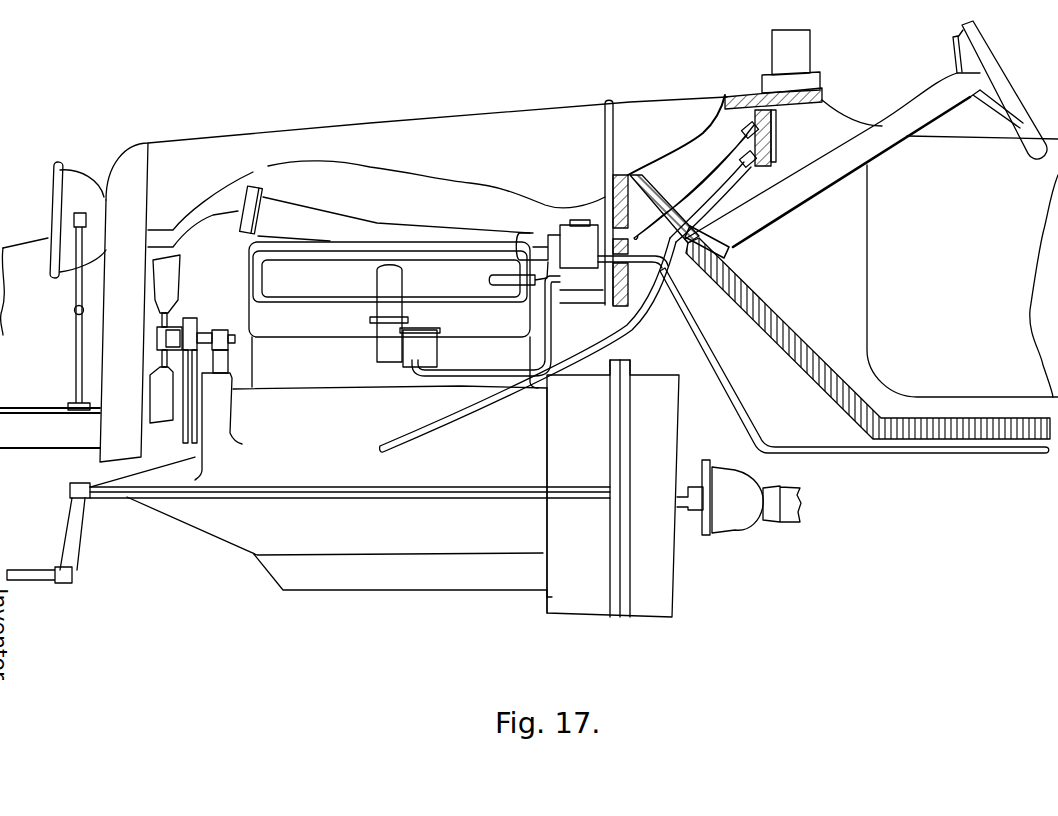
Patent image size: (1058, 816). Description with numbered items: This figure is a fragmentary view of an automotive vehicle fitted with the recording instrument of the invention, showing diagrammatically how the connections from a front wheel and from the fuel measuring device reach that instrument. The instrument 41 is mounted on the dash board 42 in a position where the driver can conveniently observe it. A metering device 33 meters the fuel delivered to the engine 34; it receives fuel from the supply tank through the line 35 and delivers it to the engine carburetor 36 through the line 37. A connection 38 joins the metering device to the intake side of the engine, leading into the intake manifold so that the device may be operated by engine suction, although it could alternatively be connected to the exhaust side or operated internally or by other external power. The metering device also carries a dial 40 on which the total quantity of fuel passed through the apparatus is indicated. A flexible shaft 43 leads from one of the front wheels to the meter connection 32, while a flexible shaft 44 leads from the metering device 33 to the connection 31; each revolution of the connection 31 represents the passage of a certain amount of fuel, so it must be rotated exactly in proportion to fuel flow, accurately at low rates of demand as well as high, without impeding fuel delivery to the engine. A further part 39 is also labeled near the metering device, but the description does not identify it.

The connection 31 is at (753, 165).
The meter connection 32 is at (748, 128).
The metering device 33 is at (572, 242).
The engine 34 is at (373, 212).
The line 35 is at (877, 453).
The engine carburetor 36 is at (370, 367).
The line 37 is at (461, 377).
The connection 38 is at (508, 277).
The pump cylinder 39 is at (428, 277).
The dial 40 is at (584, 220).
The instrument 41 is at (775, 133).
The dash board 42 is at (750, 97).
The flexible shaft 43 is at (627, 332).
The flexible shaft 44 is at (686, 189).